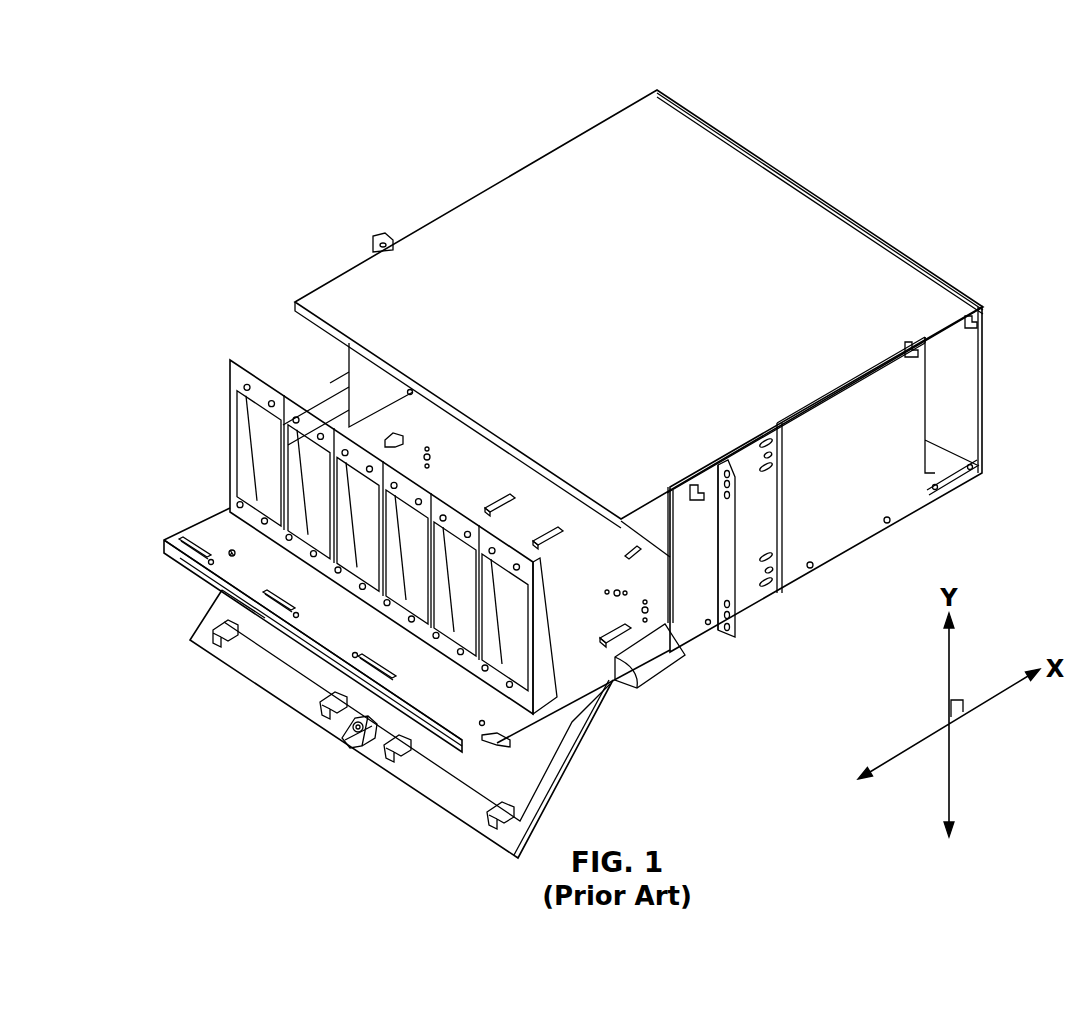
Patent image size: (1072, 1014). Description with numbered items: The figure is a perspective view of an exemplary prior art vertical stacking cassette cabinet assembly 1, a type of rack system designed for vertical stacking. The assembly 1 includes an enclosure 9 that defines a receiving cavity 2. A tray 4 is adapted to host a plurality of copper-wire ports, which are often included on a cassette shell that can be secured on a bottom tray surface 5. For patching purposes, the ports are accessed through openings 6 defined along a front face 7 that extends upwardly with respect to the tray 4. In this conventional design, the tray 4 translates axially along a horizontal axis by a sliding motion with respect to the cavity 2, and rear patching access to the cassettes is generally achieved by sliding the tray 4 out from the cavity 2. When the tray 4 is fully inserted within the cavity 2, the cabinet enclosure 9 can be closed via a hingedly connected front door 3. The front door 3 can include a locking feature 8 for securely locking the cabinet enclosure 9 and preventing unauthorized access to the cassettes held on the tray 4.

The vertical stacking cassette cabinet assembly 1 is at (360, 58).
The receiving cavity 2 is at (660, 522).
The front door 3 is at (285, 684).
The tray 4 is at (228, 570).
The bottom tray surface 5 is at (418, 460).
The openings 6 is at (256, 423).
The front face 7 is at (250, 513).
The locking feature 8 is at (352, 738).
The enclosure 9 is at (825, 245).